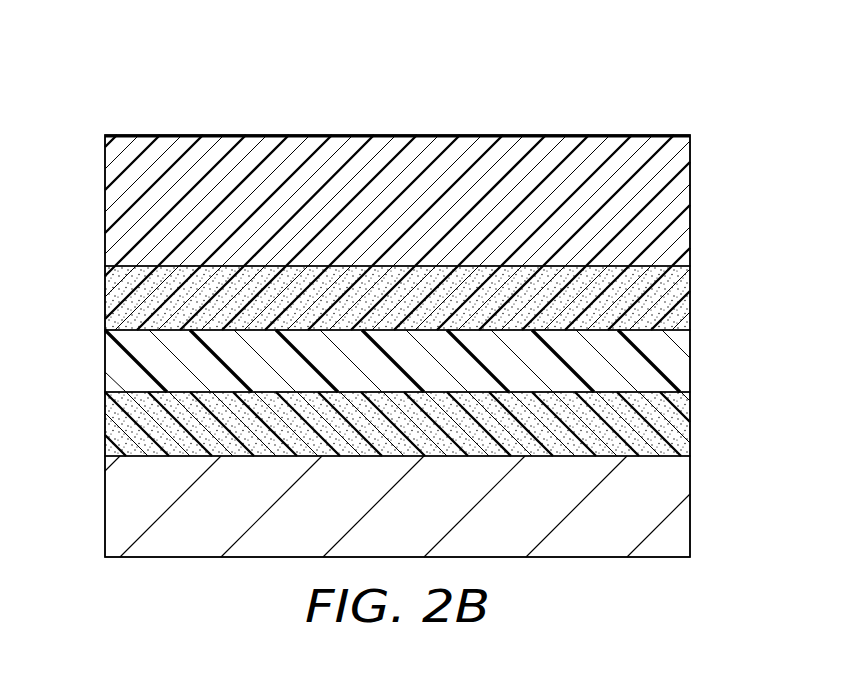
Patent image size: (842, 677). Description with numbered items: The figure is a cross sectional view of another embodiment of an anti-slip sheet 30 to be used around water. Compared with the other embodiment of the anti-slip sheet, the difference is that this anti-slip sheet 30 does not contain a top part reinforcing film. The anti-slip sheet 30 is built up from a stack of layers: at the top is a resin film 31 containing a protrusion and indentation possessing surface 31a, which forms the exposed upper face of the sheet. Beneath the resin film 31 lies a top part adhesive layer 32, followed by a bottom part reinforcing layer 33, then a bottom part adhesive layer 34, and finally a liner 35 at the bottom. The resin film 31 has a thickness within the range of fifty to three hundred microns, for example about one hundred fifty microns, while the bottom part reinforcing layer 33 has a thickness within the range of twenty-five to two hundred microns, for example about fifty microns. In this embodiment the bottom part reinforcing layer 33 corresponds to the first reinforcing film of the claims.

The anti-slip sheet 30 is at (119, 83).
The resin film 31 is at (690, 212).
The protrusion and indentation possessing surface 31a is at (675, 137).
The top part adhesive layer 32 is at (690, 293).
The bottom part reinforcing layer 33 is at (686, 366).
The bottom part adhesive layer 34 is at (690, 430).
The liner 35 is at (690, 506).